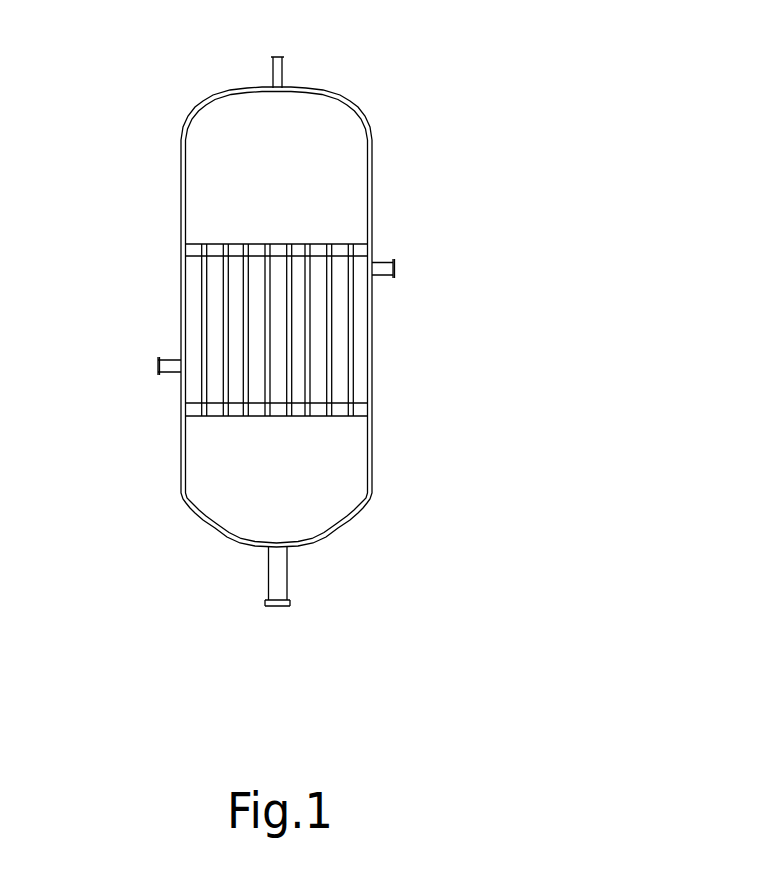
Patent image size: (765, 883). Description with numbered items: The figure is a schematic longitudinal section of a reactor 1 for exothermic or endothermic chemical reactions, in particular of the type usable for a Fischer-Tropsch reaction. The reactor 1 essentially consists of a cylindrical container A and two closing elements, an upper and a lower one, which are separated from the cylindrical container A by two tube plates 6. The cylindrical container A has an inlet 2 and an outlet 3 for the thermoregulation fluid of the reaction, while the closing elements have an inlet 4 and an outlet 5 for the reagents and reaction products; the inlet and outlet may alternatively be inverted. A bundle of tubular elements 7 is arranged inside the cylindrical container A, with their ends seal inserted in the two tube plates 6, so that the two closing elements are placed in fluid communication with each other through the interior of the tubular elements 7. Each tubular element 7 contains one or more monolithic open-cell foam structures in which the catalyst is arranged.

The reactor 1 is at (248, 317).
The inlet 2 is at (150, 368).
The outlet 3 is at (403, 268).
The inlet 4 is at (320, 65).
The outlet 5 is at (275, 610).
The tube plates 6 is at (370, 245).
The tubular elements 7 is at (247, 340).
The cylindrical container A is at (178, 300).